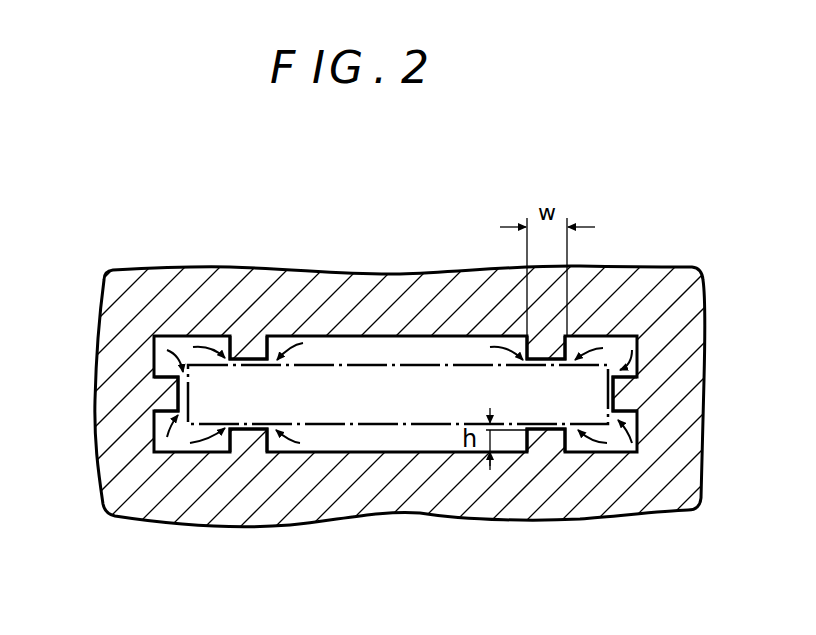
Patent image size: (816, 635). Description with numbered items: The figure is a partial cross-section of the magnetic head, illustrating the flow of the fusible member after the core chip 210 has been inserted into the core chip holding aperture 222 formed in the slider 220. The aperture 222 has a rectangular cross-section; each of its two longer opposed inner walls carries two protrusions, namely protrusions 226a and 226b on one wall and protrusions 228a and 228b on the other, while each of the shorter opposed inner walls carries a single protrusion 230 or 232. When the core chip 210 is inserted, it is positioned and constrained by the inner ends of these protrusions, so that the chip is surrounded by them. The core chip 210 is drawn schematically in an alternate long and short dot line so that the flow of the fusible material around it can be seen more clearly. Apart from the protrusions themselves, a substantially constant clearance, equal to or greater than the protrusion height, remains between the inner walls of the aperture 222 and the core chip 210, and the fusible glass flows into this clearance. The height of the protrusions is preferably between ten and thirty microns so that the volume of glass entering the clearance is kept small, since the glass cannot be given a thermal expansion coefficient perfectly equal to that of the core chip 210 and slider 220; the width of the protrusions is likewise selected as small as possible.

The core chip 210 is at (438, 365).
The slider 220 is at (175, 292).
The core chip holding aperture 222 is at (336, 345).
The protrusion 226a is at (220, 335).
The protrusion 226b is at (605, 335).
The protrusion 228a is at (222, 453).
The protrusion 228b is at (572, 450).
The protrusion 230 is at (155, 417).
The protrusion 232 is at (638, 424).